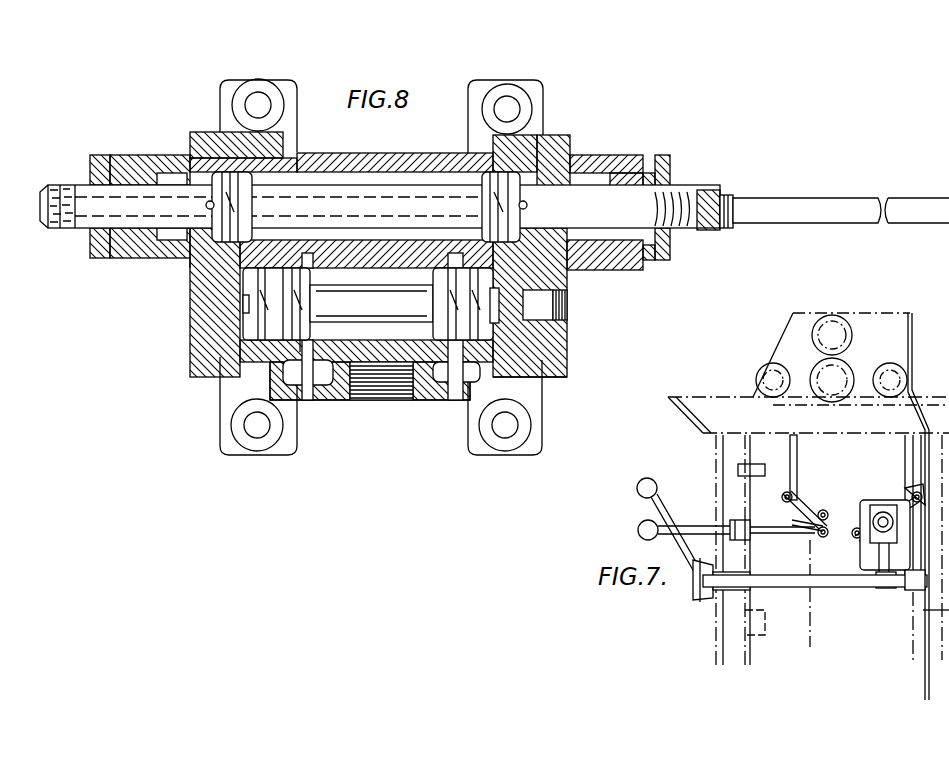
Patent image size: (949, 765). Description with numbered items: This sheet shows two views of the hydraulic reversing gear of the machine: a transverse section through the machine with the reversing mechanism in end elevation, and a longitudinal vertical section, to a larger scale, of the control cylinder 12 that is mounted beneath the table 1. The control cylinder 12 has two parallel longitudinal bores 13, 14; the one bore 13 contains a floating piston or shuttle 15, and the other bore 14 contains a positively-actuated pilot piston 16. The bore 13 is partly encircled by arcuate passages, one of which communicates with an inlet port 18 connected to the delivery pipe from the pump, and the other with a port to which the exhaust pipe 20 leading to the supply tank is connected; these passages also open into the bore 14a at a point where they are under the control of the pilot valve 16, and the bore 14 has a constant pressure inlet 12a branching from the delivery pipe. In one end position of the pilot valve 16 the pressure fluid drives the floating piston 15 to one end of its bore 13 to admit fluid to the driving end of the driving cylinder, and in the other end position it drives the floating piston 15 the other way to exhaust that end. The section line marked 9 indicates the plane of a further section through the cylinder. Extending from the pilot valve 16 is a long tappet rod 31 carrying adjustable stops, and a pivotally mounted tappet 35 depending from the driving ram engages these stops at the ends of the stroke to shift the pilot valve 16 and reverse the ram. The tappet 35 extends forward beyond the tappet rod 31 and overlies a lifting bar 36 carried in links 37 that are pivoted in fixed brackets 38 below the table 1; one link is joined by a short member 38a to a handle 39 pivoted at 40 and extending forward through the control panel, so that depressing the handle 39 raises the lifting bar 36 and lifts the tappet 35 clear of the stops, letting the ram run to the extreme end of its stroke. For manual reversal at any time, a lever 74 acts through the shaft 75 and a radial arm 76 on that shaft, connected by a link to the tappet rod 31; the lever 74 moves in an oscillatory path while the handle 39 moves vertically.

In FIG. 7, the table 1 is at (759, 438).
In FIG. 8, the section line / mounting lug bolts 9 is at (258, 130).
In FIG. 8, the control cylinder 12 is at (425, 392).
In FIG. 8, the constant pressure inlet 12a is at (190, 262).
In FIG. 8, the bore 13 is at (338, 302).
In FIG. 8, the bore 14 is at (373, 178).
In FIG. 8, the bore 14a is at (520, 262).
In FIG. 8, the floating piston 15 is at (433, 280).
In FIG. 8, the pilot piston 16 is at (268, 200).
In FIG. 8, the inlet port 18 is at (312, 378).
In FIG. 8, the exhaust pipe 20 is at (500, 372).
In FIG. 8, the tappet rod 31 is at (790, 208).
In FIG. 7, the tappet 35 is at (856, 520).
In FIG. 7, the lifting bar 36 is at (826, 536).
In FIG. 7, the links 37 is at (800, 510).
In FIG. 7, the fixed brackets 38 is at (797, 462).
In FIG. 7, the short member 38a is at (803, 522).
In FIG. 7, the handle 39 is at (638, 529).
In FIG. 7, the pivot 40 is at (750, 540).
In FIG. 7, the lever 74 is at (640, 480).
In FIG. 7, the shaft 75 is at (805, 578).
In FIG. 7, the radial arm 76 is at (868, 560).